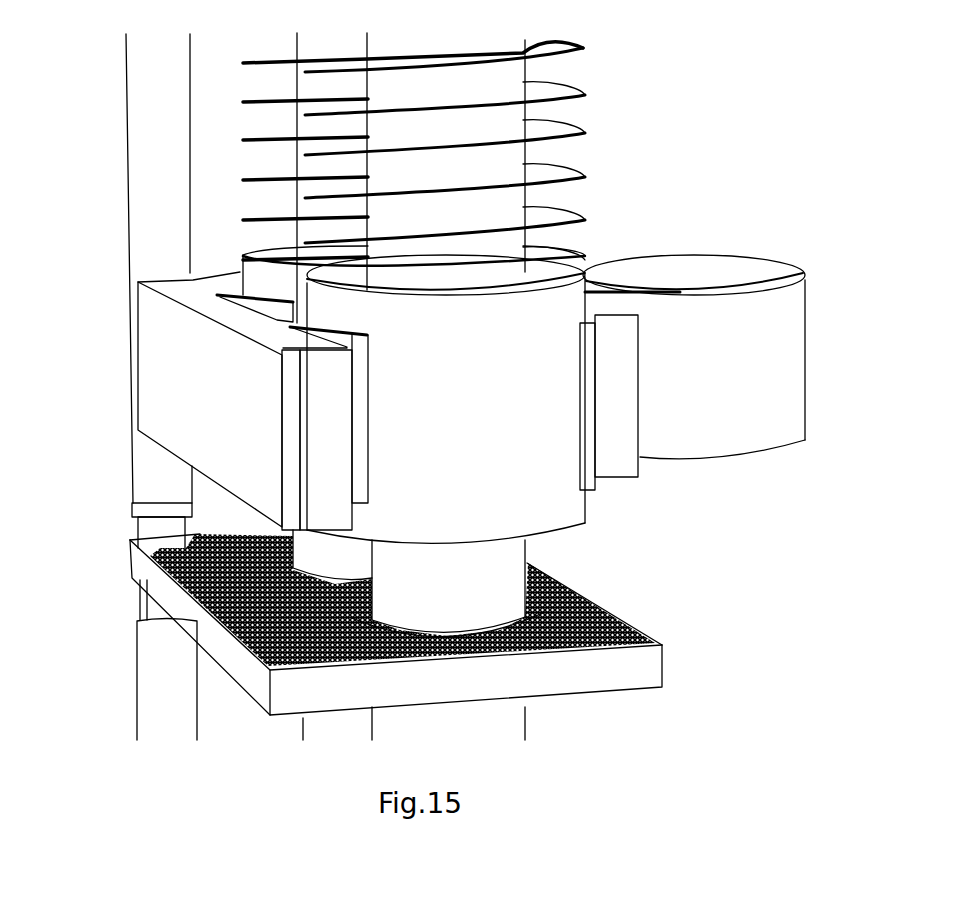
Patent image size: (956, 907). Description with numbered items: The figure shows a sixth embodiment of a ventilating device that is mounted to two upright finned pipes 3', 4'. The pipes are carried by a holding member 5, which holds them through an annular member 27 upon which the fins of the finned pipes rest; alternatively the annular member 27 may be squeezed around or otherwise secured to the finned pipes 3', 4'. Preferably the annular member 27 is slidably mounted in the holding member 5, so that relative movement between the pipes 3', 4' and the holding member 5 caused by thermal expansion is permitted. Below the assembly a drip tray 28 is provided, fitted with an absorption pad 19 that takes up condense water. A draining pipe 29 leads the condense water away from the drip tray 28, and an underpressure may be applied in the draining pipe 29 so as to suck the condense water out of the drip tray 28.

The finned pipe 3' is at (396, 168).
The finned pipe 4' is at (485, 178).
The annular member 27 is at (257, 282).
The holding member 5 is at (748, 437).
The absorption pad 19 is at (587, 585).
The drip tray 28 is at (637, 672).
The draining pipe 29 is at (153, 662).